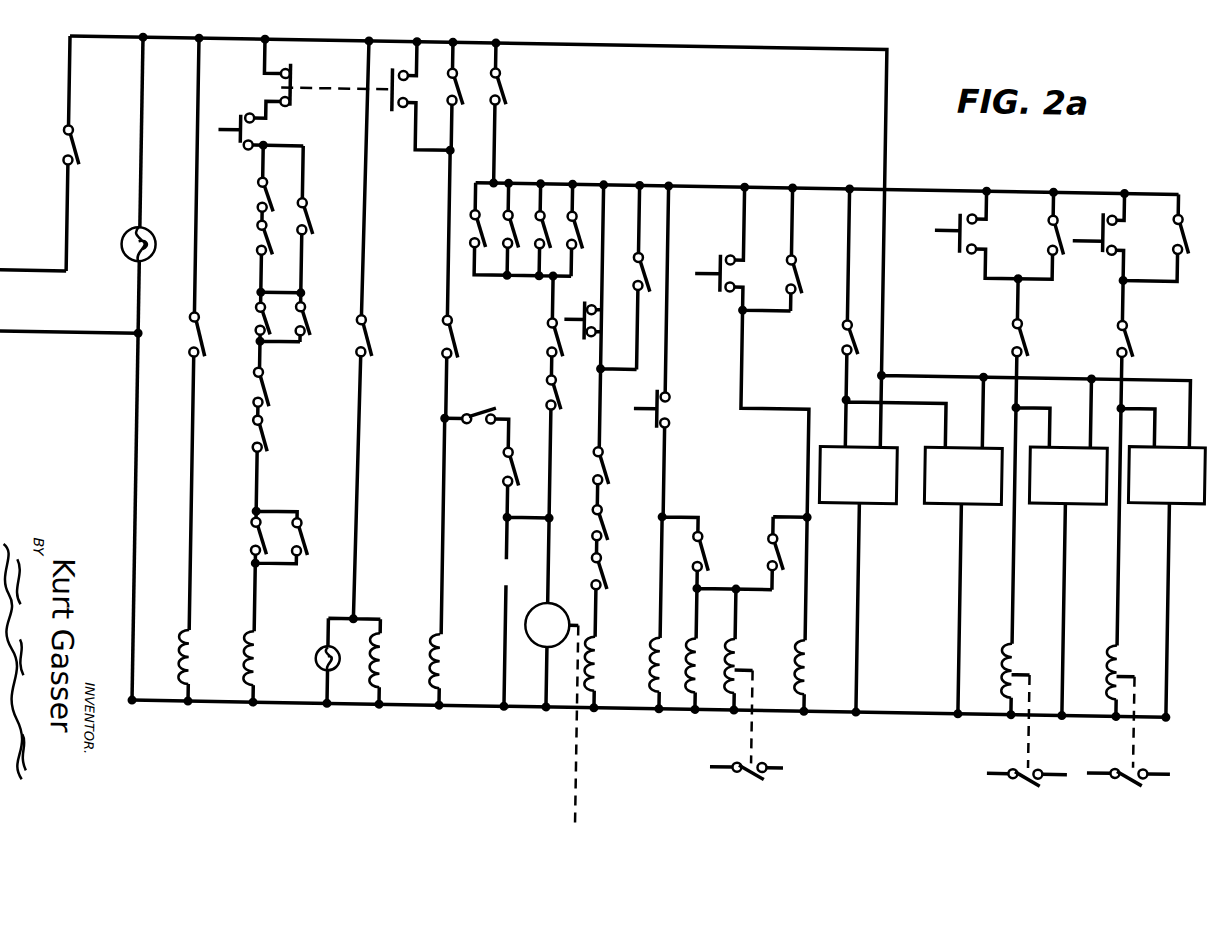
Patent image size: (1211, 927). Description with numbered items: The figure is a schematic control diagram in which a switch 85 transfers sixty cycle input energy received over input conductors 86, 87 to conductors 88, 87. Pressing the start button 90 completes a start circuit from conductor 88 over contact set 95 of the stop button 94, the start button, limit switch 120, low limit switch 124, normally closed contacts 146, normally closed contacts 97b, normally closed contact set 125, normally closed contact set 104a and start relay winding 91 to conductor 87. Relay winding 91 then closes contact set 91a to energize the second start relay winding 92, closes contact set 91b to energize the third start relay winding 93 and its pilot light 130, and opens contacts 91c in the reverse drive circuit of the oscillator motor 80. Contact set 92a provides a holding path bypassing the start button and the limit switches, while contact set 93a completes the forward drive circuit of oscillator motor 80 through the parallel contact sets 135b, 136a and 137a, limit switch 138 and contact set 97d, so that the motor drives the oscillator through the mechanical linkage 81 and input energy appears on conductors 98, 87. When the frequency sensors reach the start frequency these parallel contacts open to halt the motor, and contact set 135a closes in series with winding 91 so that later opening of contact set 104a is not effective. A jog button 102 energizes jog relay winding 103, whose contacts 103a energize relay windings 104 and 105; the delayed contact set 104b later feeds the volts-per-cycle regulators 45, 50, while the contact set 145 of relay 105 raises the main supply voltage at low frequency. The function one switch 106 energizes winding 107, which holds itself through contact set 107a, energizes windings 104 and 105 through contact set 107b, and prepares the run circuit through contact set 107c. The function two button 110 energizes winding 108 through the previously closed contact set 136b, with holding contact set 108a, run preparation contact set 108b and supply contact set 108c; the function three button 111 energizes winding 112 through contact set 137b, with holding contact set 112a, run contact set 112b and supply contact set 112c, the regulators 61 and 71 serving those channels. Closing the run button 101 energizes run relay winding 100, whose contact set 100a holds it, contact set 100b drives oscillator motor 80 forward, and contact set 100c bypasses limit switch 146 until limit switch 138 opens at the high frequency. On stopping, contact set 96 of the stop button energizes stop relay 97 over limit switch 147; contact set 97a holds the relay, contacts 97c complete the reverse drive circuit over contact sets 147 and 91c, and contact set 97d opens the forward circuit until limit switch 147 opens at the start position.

The volts-per-cycle regulator 45 is at (880, 492).
The volts-per-cycle regulator 50 is at (956, 490).
The volts-per-cycle regulator 61 is at (1070, 488).
The volts-per-cycle regulator 71 is at (1172, 486).
The oscillator motor 80 is at (538, 594).
The mechanical linkage 81 is at (589, 777).
The switch 85 is at (67, 147).
The input conductor 86 is at (48, 271).
The conductor 87 is at (92, 332).
The conductor 88 is at (626, 36).
The start button 90 is at (238, 122).
The start relay winding 91 is at (268, 646).
The contact set of relay 91 91a is at (202, 337).
The contact set of relay 91 91b is at (370, 322).
The contacts of relay 91 91c is at (485, 414).
The second start relay winding 92 is at (202, 646).
The contact set of relay 92 92a is at (310, 216).
The third start relay winding 93 is at (376, 655).
The contact set of relay 93 93a is at (500, 84).
The stop button 94 is at (342, 75).
The first contact portion of stop button 95 is at (273, 68).
The second contact portion of stop button 96 is at (404, 68).
The stop relay 97 is at (452, 662).
The contact set of relay 97 97a is at (462, 84).
The contact set of relay 97 97b is at (276, 386).
The contacts of relay 97 97c is at (518, 469).
The contact set of relay 97 97d is at (558, 386).
The conductor 98 is at (706, 176).
The run relay winding 100 is at (606, 640).
The contact set of relay 100 100a is at (640, 246).
The contact set of relay 100 100b is at (476, 222).
The contact set of relay 100 100c is at (308, 314).
The run button 101 is at (592, 300).
The jog button 102 is at (680, 402).
The jog relay winding 103 is at (666, 658).
The contacts of relay 103 103a is at (712, 530).
The relay winding 104 is at (718, 623).
The contact set of relay 104 104a is at (304, 535).
The contact set of relay 104 104b is at (846, 332).
The relay winding 105 is at (750, 642).
The function 1 on switch 106 is at (734, 235).
The function 1 relay winding 107 is at (824, 651).
The contact set of relay 107 107a is at (800, 258).
The contact set of relay 107 107b is at (782, 538).
The contact set of relay 107 107c is at (612, 459).
The relay winding 108 is at (1030, 633).
The contact set of relay 108 108a is at (1051, 228).
The contact set of relay 108 108b is at (612, 524).
The contact set of relay 108 108c is at (1042, 773).
The function 2 on button 110 is at (972, 240).
The function 3 on button 111 is at (1112, 245).
The relay winding 112 is at (1141, 633).
The contact set of relay 112 112a is at (1180, 226).
The contact set of relay 112 112b is at (604, 572).
The contact set of relay 112 112c is at (1153, 768).
The limit switch 120 is at (263, 199).
The low limit switch 124 is at (256, 246).
The normally closed contact set 125 is at (272, 437).
The pilot light 130 is at (333, 661).
The contact set of relay 135 135a is at (260, 546).
The contact set of relay 135 135b is at (527, 214).
The contact set of relay 136 136a is at (542, 232).
The contact set of relay 136 136b is at (1022, 329).
The contact set of relay 137 137a is at (582, 218).
The contact set of relay 137 137b is at (1137, 320).
The limit switch 138 is at (559, 340).
The contact set 145 is at (766, 770).
The normally closed contacts 146 is at (258, 322).
The limit switch 147 is at (458, 335).